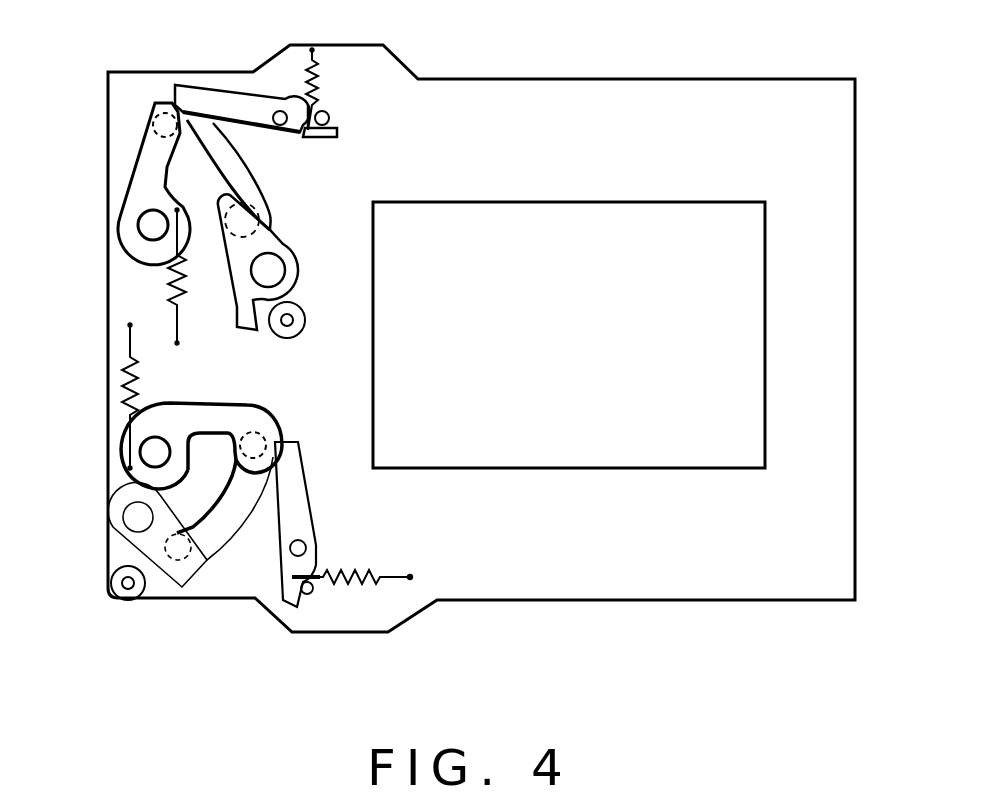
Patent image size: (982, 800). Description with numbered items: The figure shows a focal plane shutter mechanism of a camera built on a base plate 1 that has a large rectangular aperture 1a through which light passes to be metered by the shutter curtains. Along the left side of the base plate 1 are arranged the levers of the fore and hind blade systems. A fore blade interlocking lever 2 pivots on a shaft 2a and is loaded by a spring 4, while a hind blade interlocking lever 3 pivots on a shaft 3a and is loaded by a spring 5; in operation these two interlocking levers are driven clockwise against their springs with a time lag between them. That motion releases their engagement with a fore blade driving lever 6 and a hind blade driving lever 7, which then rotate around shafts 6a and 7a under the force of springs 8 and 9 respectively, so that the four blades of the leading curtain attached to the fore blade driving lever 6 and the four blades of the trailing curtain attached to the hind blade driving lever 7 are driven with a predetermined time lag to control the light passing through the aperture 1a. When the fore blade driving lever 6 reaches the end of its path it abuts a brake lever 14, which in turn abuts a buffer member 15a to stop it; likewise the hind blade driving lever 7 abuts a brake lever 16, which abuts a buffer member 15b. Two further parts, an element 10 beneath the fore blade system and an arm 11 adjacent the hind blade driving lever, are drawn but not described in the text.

The base plate 1 is at (612, 97).
The aperture 1a is at (604, 468).
The fore blade interlocking lever 2 is at (300, 487).
The shaft 2a is at (307, 548).
The hind blade interlocking lever 3 is at (247, 113).
The shaft 3a is at (290, 137).
The spring 4 is at (352, 580).
The spring 5 is at (315, 83).
The fore blade driving lever 6 is at (230, 412).
The shaft 6a is at (158, 452).
The hind blade driving lever 7 is at (155, 180).
The shaft 7a is at (150, 223).
The spring 8 is at (125, 390).
The spring 9 is at (149, 276).
The lever 10 is at (230, 532).
The arm 11 is at (260, 198).
The brake lever 14 is at (175, 580).
The buffer member 15a is at (128, 592).
The buffer member 15b is at (295, 327).
The brake lever 16 is at (280, 243).